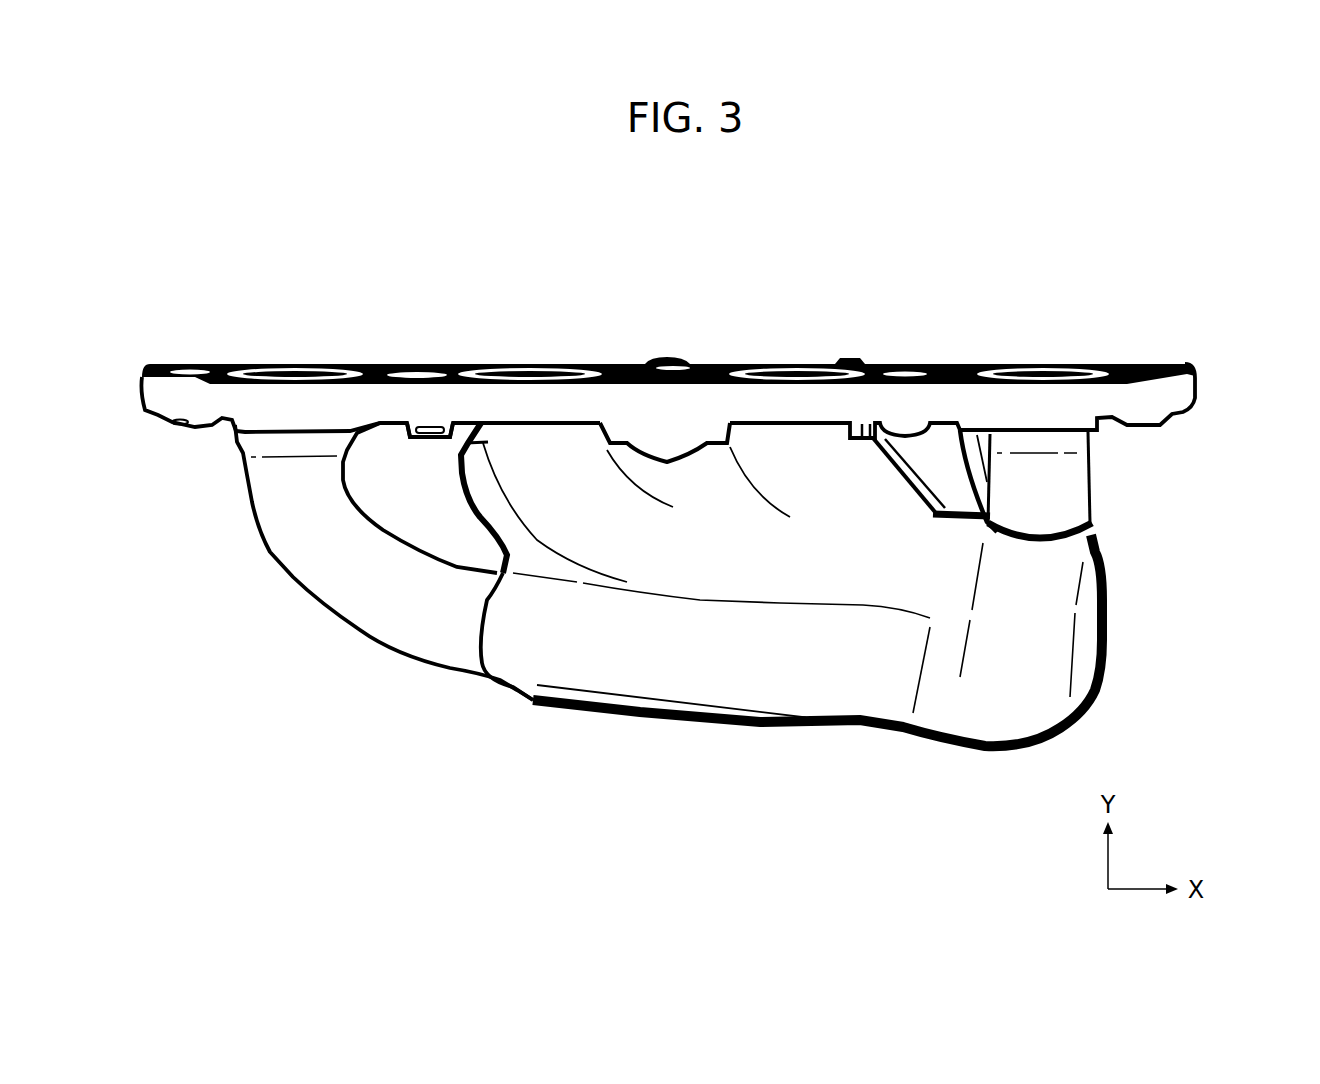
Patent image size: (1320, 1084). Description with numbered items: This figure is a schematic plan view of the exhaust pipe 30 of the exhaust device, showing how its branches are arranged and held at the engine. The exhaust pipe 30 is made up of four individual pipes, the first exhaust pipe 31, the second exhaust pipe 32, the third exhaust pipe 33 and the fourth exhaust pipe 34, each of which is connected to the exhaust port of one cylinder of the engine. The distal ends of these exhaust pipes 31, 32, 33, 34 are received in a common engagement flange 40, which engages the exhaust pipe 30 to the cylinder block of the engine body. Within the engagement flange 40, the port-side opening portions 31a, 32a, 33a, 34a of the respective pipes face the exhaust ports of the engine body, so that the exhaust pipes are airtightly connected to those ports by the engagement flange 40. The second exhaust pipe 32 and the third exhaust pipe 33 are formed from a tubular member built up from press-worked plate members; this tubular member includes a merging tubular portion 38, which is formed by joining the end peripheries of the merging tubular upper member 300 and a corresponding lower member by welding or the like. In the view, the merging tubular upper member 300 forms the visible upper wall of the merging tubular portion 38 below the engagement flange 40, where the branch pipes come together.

The exhaust pipe 30 is at (1143, 663).
The #1 exhaust pipe 31 is at (1051, 492).
The port-side opening portion 31a is at (1037, 370).
The #2 exhaust pipe 32 is at (789, 438).
The port-side opening portion 32a is at (804, 370).
The #3 exhaust pipe 33 is at (545, 440).
The port-side opening portion 33a is at (528, 370).
The #4 exhaust pipe 34 is at (297, 540).
The port-side opening portion 34a is at (293, 370).
The merging tubular portion 38 is at (697, 679).
The engagement flange 40 is at (427, 405).
The merging tubular upper member 300 is at (944, 696).